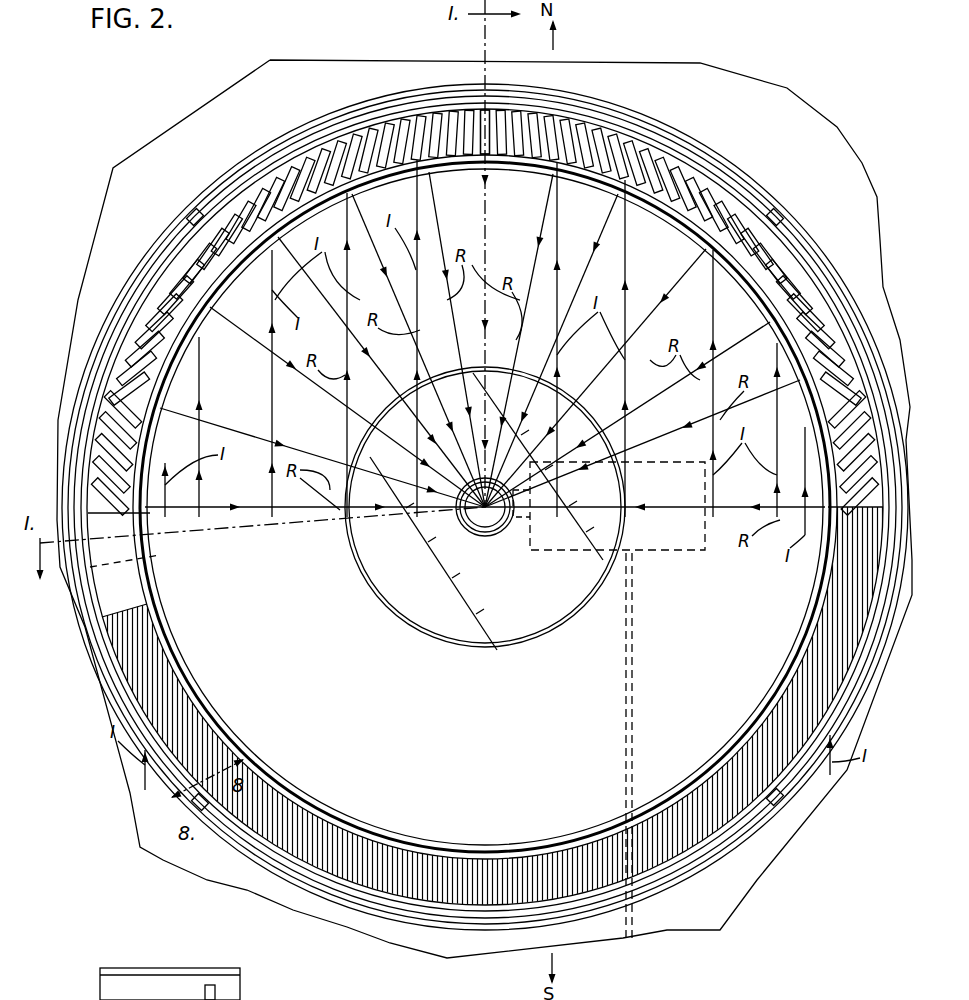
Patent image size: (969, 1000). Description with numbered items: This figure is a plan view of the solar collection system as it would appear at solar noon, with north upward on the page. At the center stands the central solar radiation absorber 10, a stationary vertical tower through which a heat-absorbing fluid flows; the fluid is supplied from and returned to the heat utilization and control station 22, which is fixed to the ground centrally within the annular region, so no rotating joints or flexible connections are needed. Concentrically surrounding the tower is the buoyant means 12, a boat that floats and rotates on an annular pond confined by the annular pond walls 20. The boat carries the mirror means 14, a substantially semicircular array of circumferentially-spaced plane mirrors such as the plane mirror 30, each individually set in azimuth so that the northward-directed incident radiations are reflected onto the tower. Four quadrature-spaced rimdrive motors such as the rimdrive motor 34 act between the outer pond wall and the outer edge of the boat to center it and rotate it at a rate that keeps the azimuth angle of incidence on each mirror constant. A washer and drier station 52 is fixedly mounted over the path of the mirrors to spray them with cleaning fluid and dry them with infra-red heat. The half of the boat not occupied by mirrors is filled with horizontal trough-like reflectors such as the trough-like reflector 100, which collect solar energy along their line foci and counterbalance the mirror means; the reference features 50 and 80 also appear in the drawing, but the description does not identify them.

The central solar radiation absorber 10 is at (497, 536).
The buoyant means 12 is at (127, 663).
The mirror means 14 is at (173, 290).
The annular pond walls 20 is at (786, 660).
The heat utilization and control station 22 is at (683, 551).
The plane mirror 30 is at (468, 112).
The rimdrive motor 34 is at (198, 212).
The inner ring 50 is at (440, 617).
The washer and drier station 52 is at (163, 577).
The control unit 80 is at (386, 776).
The trough-like reflector 100 is at (839, 618).